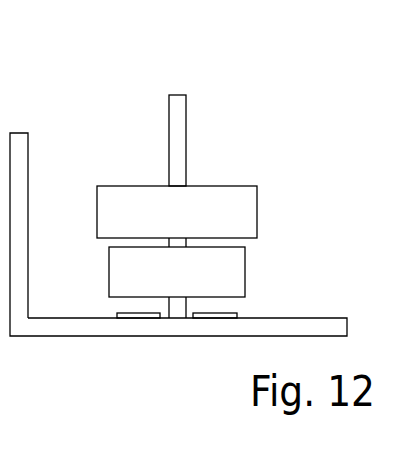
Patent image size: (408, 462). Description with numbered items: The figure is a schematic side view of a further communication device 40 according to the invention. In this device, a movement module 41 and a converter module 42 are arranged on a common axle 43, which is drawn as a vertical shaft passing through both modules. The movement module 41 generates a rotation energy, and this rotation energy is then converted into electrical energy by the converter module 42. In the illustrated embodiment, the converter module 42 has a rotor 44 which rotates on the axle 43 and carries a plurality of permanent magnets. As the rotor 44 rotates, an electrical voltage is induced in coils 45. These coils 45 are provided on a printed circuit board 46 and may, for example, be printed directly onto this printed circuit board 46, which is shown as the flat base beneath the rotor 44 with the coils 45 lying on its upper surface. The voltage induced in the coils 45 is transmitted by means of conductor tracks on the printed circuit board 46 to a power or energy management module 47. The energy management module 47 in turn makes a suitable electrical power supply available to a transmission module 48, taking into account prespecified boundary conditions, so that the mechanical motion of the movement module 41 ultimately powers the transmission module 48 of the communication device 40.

The communication device 40 is at (255, 67).
The movement module 41 is at (161, 222).
The converter module 42 is at (293, 247).
The common axle 43 is at (184, 144).
The rotor 44 is at (161, 286).
The coils 45 is at (132, 318).
The printed circuit board 46 is at (312, 318).
The energy management module 47 is at (52, 138).
The transmission module 48 is at (51, 208).